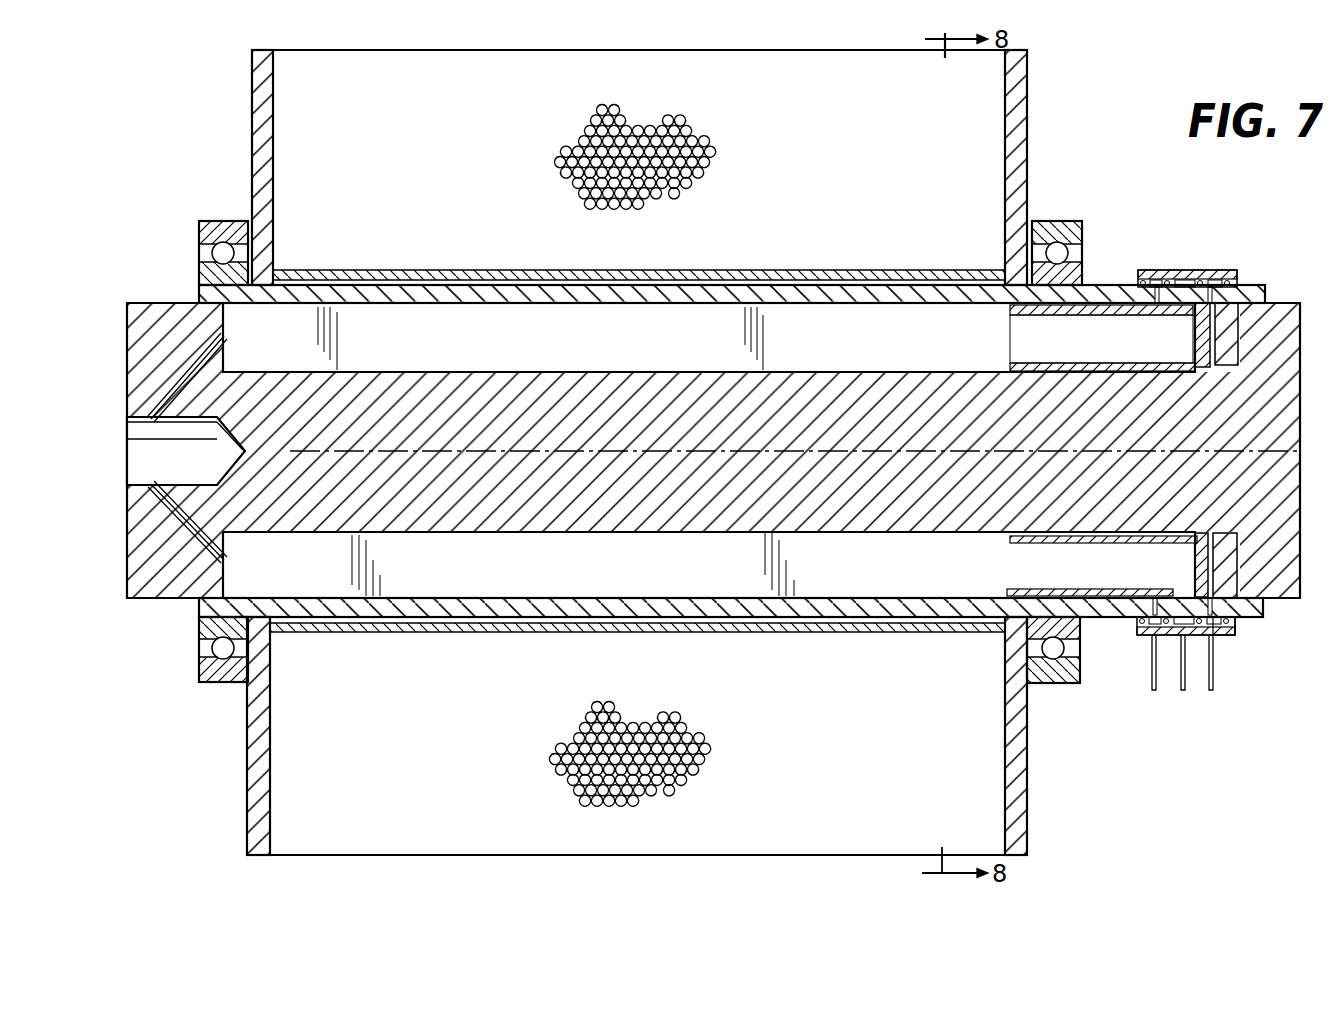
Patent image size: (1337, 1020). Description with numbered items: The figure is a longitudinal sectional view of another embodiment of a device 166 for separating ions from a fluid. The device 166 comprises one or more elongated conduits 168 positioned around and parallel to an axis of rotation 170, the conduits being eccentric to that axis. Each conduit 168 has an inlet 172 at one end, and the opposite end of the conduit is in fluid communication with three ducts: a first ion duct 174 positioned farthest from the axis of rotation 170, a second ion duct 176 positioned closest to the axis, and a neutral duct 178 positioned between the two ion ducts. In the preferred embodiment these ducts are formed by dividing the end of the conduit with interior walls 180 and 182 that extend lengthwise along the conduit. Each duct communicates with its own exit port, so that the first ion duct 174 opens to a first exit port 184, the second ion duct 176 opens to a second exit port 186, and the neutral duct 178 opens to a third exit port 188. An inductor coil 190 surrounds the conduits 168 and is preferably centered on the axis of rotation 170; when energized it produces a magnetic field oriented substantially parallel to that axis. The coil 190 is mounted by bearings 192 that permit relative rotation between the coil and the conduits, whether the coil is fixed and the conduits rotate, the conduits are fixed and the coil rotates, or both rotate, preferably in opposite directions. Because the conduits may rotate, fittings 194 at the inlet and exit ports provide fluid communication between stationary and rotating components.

The device for separating ions from a fluid 166 is at (1112, 136).
The elongated conduit 168 is at (447, 352).
The axis of rotation 170 is at (798, 452).
The inlet 172 is at (220, 335).
The first ion duct 174 is at (1095, 297).
The second ion duct 176 is at (1062, 373).
The neutral duct 178 is at (1083, 354).
The interior wall 180 is at (1013, 312).
The interior wall 182 is at (1013, 363).
The first exit port 184 is at (1138, 634).
The second exit port 186 is at (1222, 635).
The third exit port 188 is at (1185, 677).
The inductor coil 190 is at (830, 792).
The bearings 192 is at (1058, 220).
The fittings 194 is at (1193, 270).